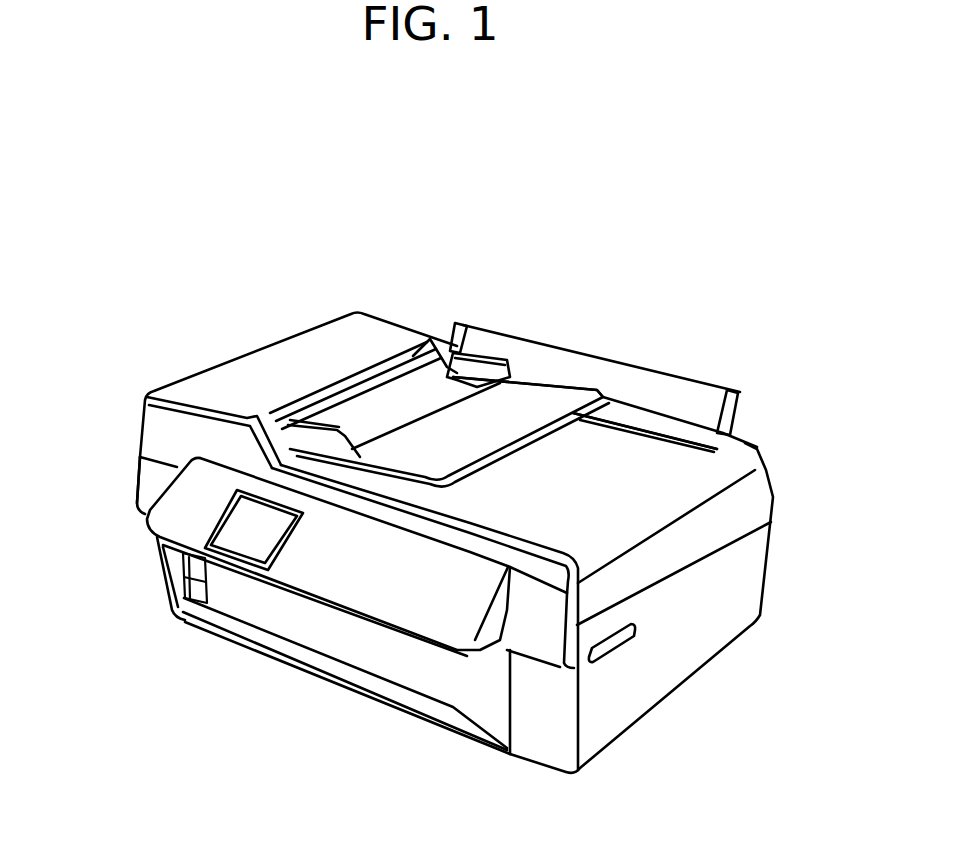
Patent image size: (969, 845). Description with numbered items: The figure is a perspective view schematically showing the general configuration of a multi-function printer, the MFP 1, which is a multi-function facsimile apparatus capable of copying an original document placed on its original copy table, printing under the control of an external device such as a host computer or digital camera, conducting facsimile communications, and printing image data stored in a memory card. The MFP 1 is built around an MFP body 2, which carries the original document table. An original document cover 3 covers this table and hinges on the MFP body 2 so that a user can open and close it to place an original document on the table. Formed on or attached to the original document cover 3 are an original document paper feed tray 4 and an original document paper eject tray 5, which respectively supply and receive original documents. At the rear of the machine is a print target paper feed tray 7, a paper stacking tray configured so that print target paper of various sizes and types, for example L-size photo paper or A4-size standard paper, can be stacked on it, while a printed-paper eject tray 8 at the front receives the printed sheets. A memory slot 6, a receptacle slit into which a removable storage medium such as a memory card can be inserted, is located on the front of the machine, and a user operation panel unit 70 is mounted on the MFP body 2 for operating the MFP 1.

The MFP 1 is at (733, 263).
The MFP body 2 is at (136, 480).
The original document cover 3 is at (141, 428).
The original document paper feed tray 4 is at (383, 398).
The original document paper eject tray 5 is at (582, 474).
The memory slot 6 is at (199, 585).
The print target paper feed tray 7 is at (606, 360).
The printed-paper eject tray 8 is at (427, 708).
The user operation panel unit 70 is at (343, 558).